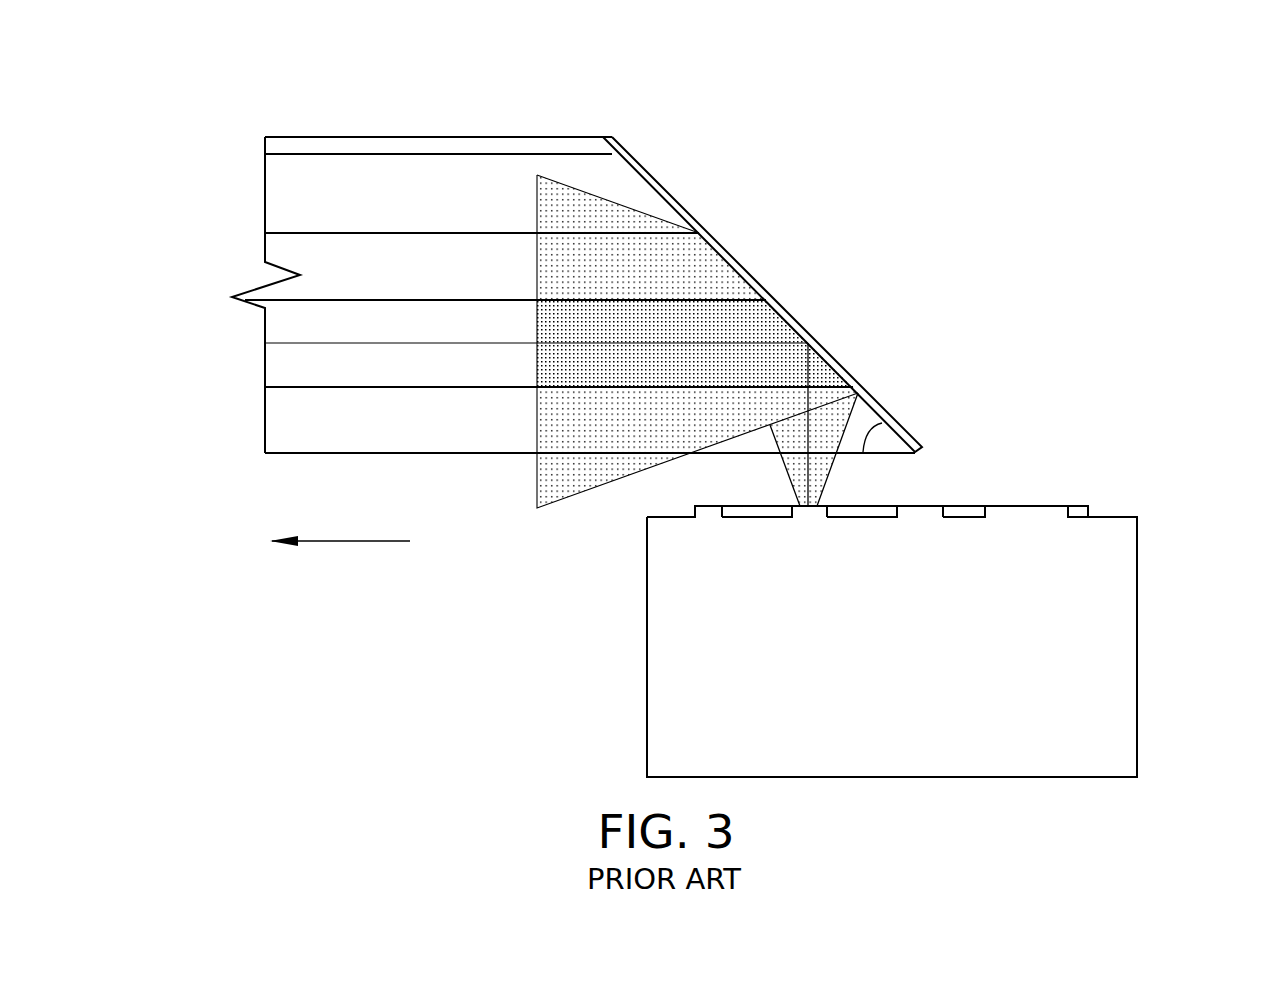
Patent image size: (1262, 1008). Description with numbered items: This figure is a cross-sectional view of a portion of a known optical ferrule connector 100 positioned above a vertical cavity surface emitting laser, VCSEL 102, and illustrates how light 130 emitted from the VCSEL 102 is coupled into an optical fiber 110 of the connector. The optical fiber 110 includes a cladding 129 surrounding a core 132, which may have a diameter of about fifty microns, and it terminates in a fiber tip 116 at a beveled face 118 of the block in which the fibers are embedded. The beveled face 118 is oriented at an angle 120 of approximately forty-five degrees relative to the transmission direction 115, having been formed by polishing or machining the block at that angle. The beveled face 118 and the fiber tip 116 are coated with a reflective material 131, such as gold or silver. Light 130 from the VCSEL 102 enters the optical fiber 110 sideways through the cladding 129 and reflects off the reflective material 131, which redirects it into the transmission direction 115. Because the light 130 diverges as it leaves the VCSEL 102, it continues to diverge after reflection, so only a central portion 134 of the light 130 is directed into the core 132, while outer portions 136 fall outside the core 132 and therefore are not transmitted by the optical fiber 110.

The optical ferrule connector 100 is at (295, 98).
The vertical cavity surface emitting laser (VCSEL) 102 is at (1087, 672).
The optical fiber 110 is at (298, 253).
The transmission direction 115 is at (338, 541).
The fiber tip 116 is at (866, 404).
The beveled face 118 is at (627, 185).
The angle 120 is at (873, 442).
The cladding 129 is at (285, 433).
The light 130 is at (830, 473).
The reflective material 131 is at (698, 218).
The core 132 is at (273, 328).
The central portion of light 134 is at (697, 345).
The outer portions of light 136 is at (672, 268).